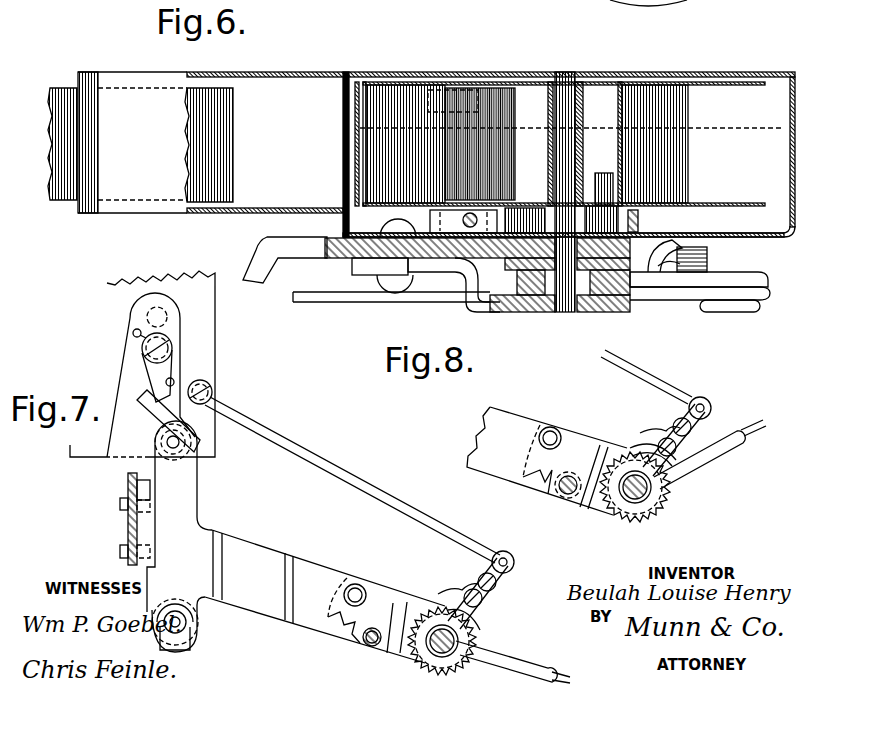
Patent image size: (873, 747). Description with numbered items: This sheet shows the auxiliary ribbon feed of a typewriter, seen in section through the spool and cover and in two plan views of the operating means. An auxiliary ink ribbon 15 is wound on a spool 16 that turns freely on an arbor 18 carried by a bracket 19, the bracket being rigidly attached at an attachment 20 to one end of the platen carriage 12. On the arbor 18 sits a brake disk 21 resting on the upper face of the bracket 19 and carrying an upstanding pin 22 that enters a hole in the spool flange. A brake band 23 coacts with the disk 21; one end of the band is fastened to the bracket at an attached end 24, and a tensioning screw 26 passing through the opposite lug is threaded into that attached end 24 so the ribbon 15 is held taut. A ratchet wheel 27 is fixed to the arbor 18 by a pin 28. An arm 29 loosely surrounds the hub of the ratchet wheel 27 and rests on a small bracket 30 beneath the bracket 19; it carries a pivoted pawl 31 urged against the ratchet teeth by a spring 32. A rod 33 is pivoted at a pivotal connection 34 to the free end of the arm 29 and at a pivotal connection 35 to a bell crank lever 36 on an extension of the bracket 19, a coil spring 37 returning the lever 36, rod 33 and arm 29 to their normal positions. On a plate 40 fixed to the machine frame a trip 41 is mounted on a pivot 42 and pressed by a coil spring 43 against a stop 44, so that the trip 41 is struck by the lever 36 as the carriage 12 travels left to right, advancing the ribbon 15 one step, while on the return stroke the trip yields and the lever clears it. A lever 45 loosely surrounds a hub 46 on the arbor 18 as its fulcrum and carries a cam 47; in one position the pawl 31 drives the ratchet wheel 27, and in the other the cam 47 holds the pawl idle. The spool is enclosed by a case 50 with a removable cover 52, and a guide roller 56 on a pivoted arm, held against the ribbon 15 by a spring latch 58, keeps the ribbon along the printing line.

In FIG. 7, the platen carriage 12 is at (128, 531).
In FIG. 6, the auxiliary ink ribbon 15 is at (233, 120).
In FIG. 6, the spool 16 is at (548, 108).
In FIG. 6, the arbor 18 is at (565, 82).
In FIG. 6, the bracket 19 is at (255, 250).
In FIG. 7, the bracket 19 is at (303, 567).
In FIG. 8, the bracket 19 is at (472, 456).
In FIG. 7, the attachment 20 is at (150, 500).
In FIG. 6, the brake disk 21 is at (528, 215).
In FIG. 6, the upstanding pin 22 is at (603, 172).
In FIG. 6, the brake band 23 is at (638, 226).
In FIG. 6, the attached end of band 24 is at (433, 205).
In FIG. 6, the tensioning screw 26 is at (468, 228).
In FIG. 6, the ratchet wheel 27 is at (426, 285).
In FIG. 7, the ratchet wheel 27 is at (410, 650).
In FIG. 8, the ratchet wheel 27 is at (630, 520).
In FIG. 6, the pin 28 is at (580, 312).
In FIG. 6, the arm 29 is at (757, 272).
In FIG. 7, the arm 29 is at (505, 577).
In FIG. 8, the arm 29 is at (700, 425).
In FIG. 6, the small bracket 30 is at (510, 312).
In FIG. 7, the small bracket 30 is at (380, 593).
In FIG. 8, the small bracket 30 is at (552, 490).
In FIG. 6, the pawl 31 is at (672, 267).
In FIG. 7, the pawl 31 is at (440, 594).
In FIG. 8, the pawl 31 is at (648, 430).
In FIG. 6, the spring 32 is at (708, 266).
In FIG. 7, the spring 32 is at (465, 590).
In FIG. 8, the spring 32 is at (665, 432).
In FIG. 6, the rod 33 is at (325, 303).
In FIG. 7, the rod 33 is at (410, 507).
In FIG. 8, the rod 33 is at (640, 372).
In FIG. 6, the pivotal connection 34 is at (750, 311).
In FIG. 7, the pivotal connection 34 is at (508, 555).
In FIG. 8, the pivotal connection 34 is at (703, 400).
In FIG. 7, the pivotal connection 35 is at (210, 390).
In FIG. 7, the bell crank lever 36 is at (150, 425).
In FIG. 7, the coil spring 37 is at (177, 417).
In FIG. 7, the plate 40 is at (178, 310).
In FIG. 7, the trip 41 is at (153, 387).
In FIG. 7, the pivot 42 is at (175, 350).
In FIG. 7, the coil spring 43 is at (137, 329).
In FIG. 7, the stop 44 is at (175, 383).
In FIG. 7, the lever 45 is at (530, 664).
In FIG. 8, the lever 45 is at (710, 460).
In FIG. 6, the hub 46 is at (585, 219).
In FIG. 7, the hub 46 is at (430, 651).
In FIG. 8, the hub 46 is at (645, 498).
In FIG. 6, the cam 47 is at (668, 241).
In FIG. 7, the cam 47 is at (480, 632).
In FIG. 8, the cam 47 is at (635, 446).
In FIG. 6, the case 50 is at (684, 3).
In FIG. 6, the cover 52 is at (491, 67).
In FIG. 7, the guide roller 56 is at (200, 626).
In FIG. 6, the spring latch 58 is at (140, 206).